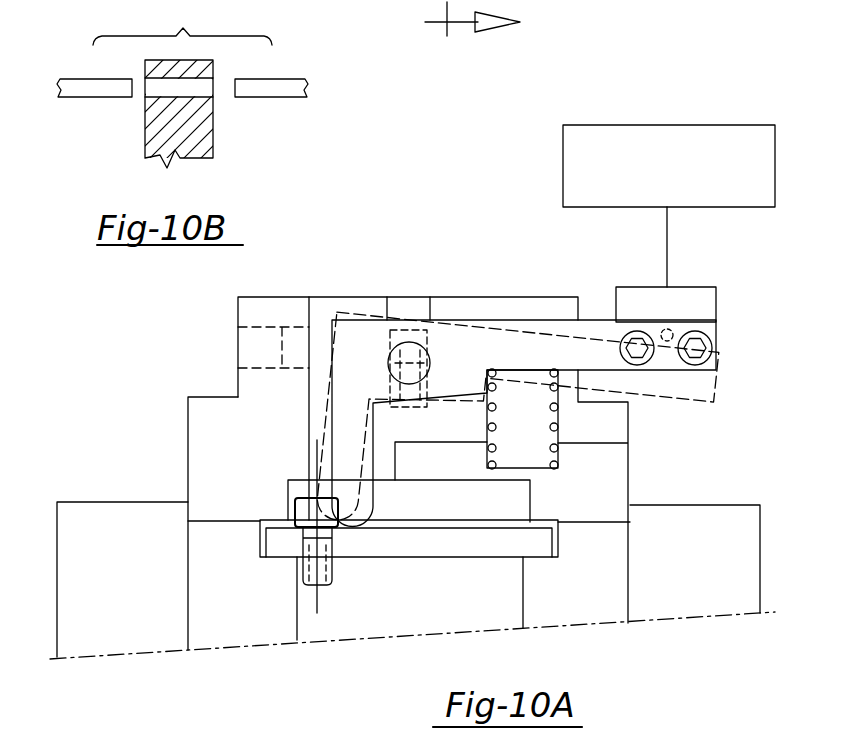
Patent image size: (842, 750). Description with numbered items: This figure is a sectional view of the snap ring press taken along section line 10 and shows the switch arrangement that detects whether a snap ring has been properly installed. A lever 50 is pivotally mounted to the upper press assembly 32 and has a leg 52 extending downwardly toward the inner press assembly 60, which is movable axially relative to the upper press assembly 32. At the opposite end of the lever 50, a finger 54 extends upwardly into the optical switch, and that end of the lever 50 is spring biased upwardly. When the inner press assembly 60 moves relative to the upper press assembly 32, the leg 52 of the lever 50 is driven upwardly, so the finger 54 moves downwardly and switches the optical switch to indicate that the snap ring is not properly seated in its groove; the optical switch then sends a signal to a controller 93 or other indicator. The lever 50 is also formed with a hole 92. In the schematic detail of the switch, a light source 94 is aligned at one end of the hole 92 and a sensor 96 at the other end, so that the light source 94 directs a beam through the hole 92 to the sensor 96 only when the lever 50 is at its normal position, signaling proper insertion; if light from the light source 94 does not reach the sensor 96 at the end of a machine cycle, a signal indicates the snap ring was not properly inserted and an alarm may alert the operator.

In FIG. 10A, the section line 10— 10 is at (504, 21).
In FIG. 10A, the upper press assembly 32 is at (195, 392).
In FIG. 10B, the lever 50 is at (150, 125).
In FIG. 10A, the lever 50 is at (456, 320).
In FIG. 10A, the leg 52 is at (330, 455).
In FIG. 10A, the finger 54 is at (705, 287).
In FIG. 10A, the inner press assembly 60 is at (498, 508).
In FIG. 10B, the hole 92 is at (208, 87).
In FIG. 10A, the hole 92 is at (672, 333).
In FIG. 10A, the controller 93 is at (648, 188).
In FIG. 10B, the light source 94 is at (116, 94).
In FIG. 10B, the sensor 96 is at (250, 96).